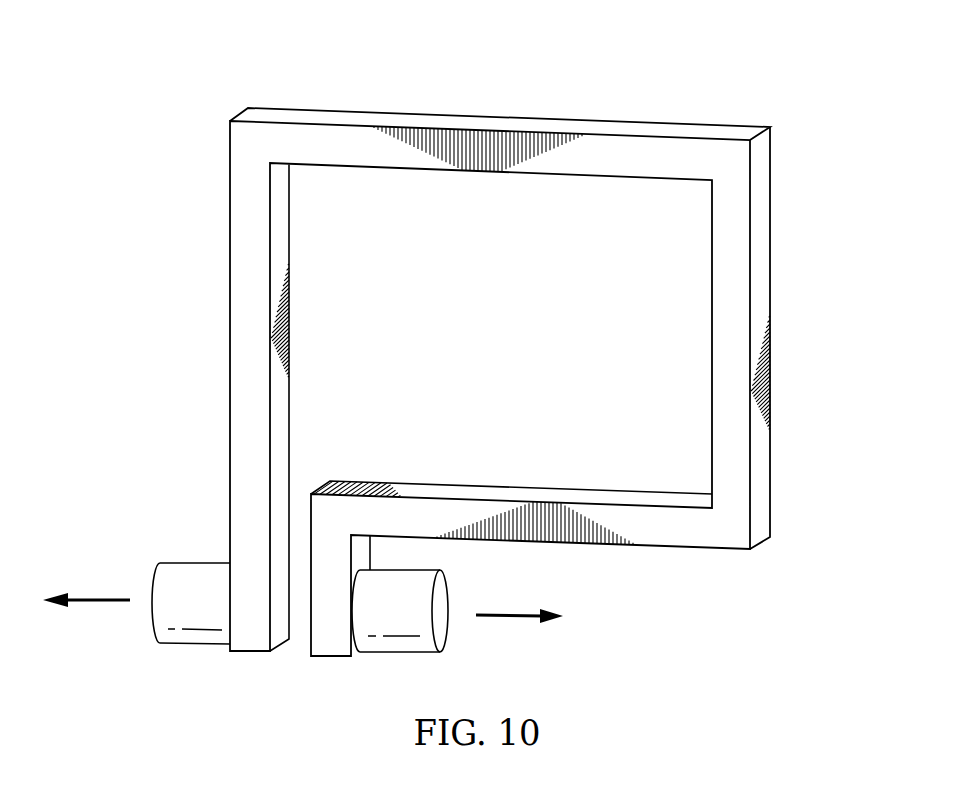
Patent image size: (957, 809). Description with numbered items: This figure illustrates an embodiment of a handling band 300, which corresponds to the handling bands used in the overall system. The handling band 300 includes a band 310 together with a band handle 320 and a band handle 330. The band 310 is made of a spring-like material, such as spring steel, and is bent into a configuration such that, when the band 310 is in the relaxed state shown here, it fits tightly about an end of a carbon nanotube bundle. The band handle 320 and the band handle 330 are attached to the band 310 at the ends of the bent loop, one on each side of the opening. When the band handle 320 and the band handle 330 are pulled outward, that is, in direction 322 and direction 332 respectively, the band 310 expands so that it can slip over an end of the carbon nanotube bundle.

The handling band 300 is at (441, 357).
The band 310 is at (760, 293).
The band handle 320 is at (187, 636).
The direction 322 is at (93, 604).
The band handle 330 is at (402, 643).
The direction 332 is at (510, 618).